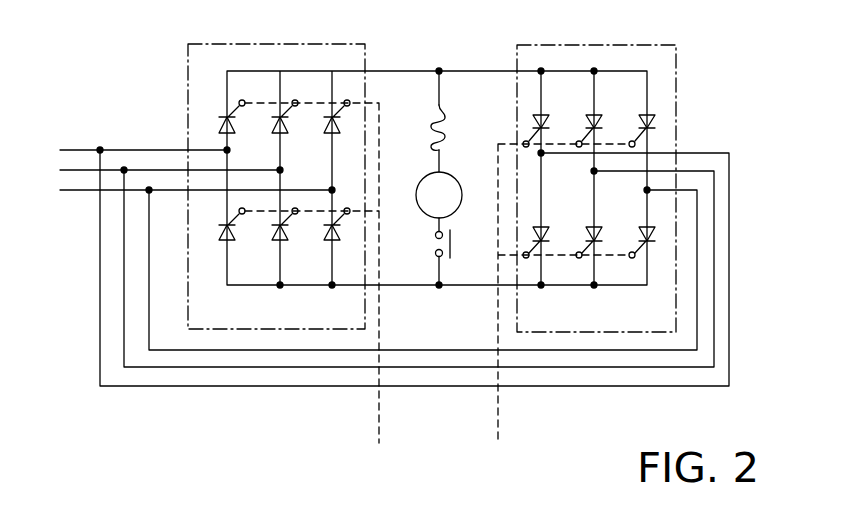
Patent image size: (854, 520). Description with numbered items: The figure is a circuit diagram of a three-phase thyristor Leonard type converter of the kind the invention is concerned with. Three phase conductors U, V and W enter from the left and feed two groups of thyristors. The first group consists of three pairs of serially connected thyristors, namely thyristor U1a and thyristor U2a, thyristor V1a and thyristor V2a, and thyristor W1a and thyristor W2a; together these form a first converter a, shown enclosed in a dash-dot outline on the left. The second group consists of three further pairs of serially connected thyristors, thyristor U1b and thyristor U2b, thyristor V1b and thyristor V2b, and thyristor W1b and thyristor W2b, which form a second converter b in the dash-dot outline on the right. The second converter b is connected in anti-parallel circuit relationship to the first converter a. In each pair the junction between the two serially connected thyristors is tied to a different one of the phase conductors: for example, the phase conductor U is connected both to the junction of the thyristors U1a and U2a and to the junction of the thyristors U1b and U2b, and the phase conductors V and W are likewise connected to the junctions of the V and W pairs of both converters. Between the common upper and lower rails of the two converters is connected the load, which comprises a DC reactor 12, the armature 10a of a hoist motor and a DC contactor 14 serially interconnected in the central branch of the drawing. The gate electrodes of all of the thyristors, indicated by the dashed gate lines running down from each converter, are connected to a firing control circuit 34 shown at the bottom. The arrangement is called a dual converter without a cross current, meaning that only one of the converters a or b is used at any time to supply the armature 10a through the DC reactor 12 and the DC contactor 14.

The armature of hoist motor 10a is at (461, 186).
The DC reactor 12 is at (447, 121).
The DC contactor 14 is at (433, 240).
The firing control circuit 34 is at (438, 481).
The first converter a is at (262, 43).
The second converter b is at (592, 44).
The phase conductor U is at (384, 262).
The phase conductor V is at (376, 262).
The phase conductor W is at (367, 264).
The thyristor U1a is at (241, 130).
The thyristor V1a is at (294, 130).
The thyristor W1a is at (338, 122).
The thyristor U2a is at (244, 240).
The thyristor V2a is at (297, 240).
The thyristor W2a is at (340, 242).
The thyristor U1b is at (550, 117).
The thyristor V1b is at (604, 117).
The thyristor W1b is at (651, 119).
The thyristor U2b is at (554, 229).
The thyristor V2b is at (606, 229).
The thyristor W2b is at (653, 236).